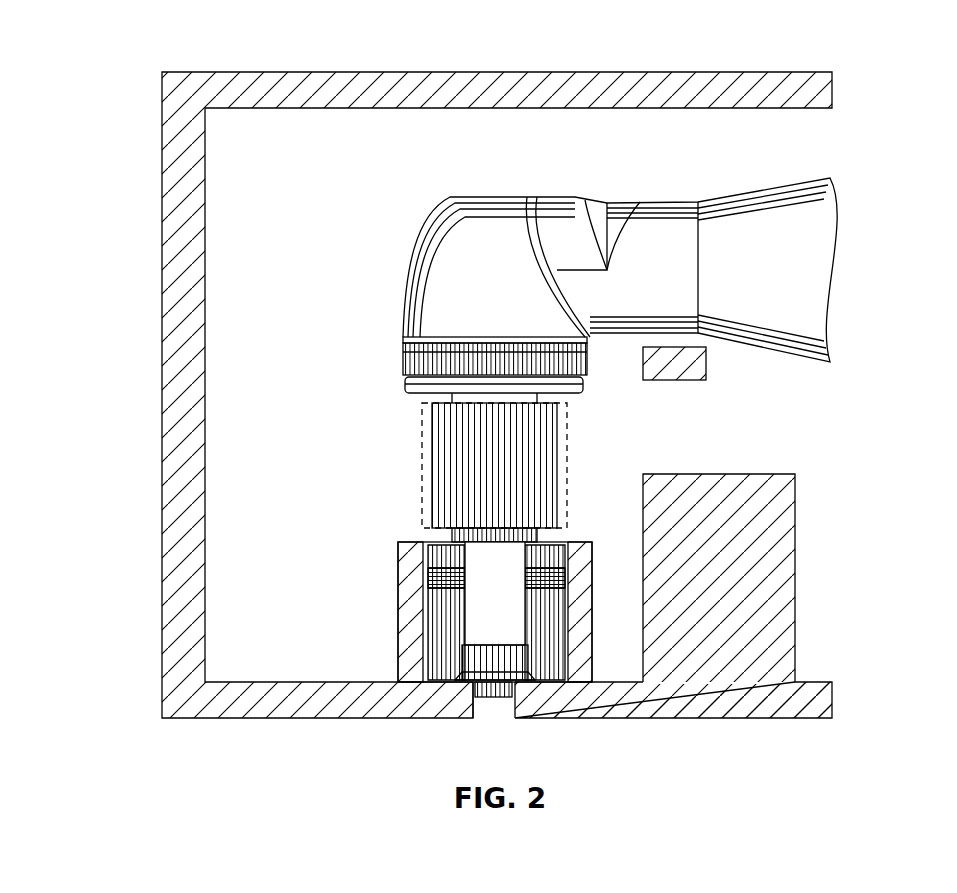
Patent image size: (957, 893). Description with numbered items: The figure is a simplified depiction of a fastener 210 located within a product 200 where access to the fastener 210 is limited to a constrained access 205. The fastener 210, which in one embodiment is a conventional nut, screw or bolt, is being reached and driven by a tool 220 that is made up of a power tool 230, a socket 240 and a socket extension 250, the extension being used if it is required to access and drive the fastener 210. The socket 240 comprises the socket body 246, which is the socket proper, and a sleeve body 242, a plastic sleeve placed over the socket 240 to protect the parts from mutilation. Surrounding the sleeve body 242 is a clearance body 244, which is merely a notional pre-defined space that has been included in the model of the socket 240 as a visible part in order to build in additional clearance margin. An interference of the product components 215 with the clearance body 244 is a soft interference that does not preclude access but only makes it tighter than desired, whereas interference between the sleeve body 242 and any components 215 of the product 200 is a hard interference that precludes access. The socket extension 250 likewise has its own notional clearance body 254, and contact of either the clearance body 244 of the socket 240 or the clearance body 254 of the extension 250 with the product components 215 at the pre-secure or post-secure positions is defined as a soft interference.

The product 200 is at (843, 55).
The constrained access 205 is at (498, 155).
The fastener 210 is at (493, 700).
The product components 215 is at (752, 108).
The tool 220 is at (302, 348).
The power tool 230 is at (463, 260).
The socket 240 is at (479, 595).
The sleeve body 242 is at (425, 572).
The clearance body 244 is at (592, 562).
The socket body 246 is at (495, 635).
The socket extension 250 is at (485, 480).
The clearance body 254 is at (567, 450).